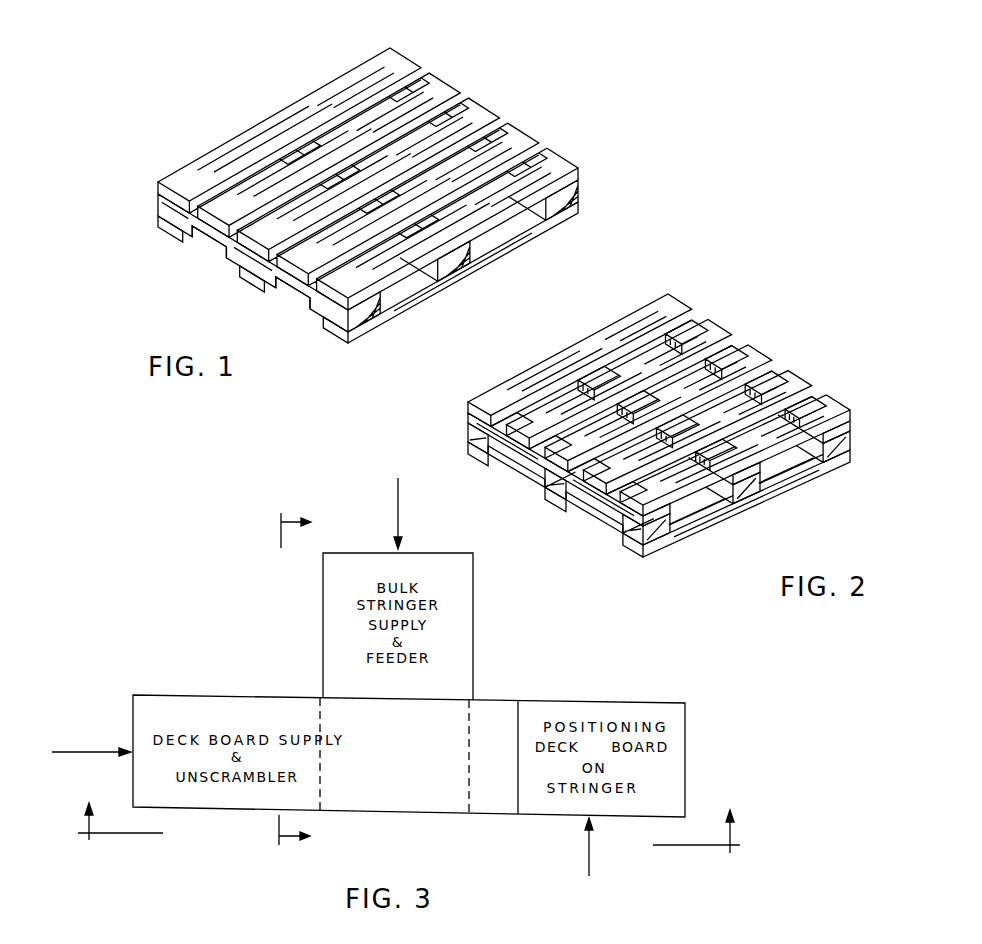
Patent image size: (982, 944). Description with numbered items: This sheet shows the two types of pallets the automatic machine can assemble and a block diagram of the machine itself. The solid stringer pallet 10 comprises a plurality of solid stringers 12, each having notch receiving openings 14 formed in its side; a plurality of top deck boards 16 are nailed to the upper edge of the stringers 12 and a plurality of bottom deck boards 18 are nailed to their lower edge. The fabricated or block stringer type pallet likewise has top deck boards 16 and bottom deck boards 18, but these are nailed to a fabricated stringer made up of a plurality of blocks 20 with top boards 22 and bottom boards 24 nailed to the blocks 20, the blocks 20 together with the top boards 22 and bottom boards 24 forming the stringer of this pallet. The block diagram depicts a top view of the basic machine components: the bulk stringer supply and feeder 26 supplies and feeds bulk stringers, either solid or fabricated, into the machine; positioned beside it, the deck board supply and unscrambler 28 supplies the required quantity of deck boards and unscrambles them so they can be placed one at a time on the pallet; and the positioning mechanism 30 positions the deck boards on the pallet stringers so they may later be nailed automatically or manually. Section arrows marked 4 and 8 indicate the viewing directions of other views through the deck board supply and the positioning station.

In FIG. 1, the solid stringer pallet 10 is at (226, 90).
In FIG. 1, the solid stringer 12 is at (580, 185).
In FIG. 1, the notch receiving opening 14 is at (205, 238).
In FIG. 1, the top deck board 16 is at (398, 56).
In FIG. 2, the top deck board 16 is at (670, 299).
In FIG. 1, the bottom deck board 18 is at (169, 232).
In FIG. 2, the bottom deck board 18 is at (812, 456).
In FIG. 2, the block 20 is at (852, 436).
In FIG. 2, the top board 22 is at (528, 466).
In FIG. 2, the bottom board 24 is at (608, 533).
In FIG. 3, the bulk stringer supply and feeder 26 is at (385, 506).
In FIG. 3, the deck board supply and unscrambler 28 is at (91, 742).
In FIG. 3, the positioning mechanism 30 is at (576, 848).
In FIG. 3, the section line 4 is at (409, 811).
In FIG. 3, the section line 8 is at (305, 683).